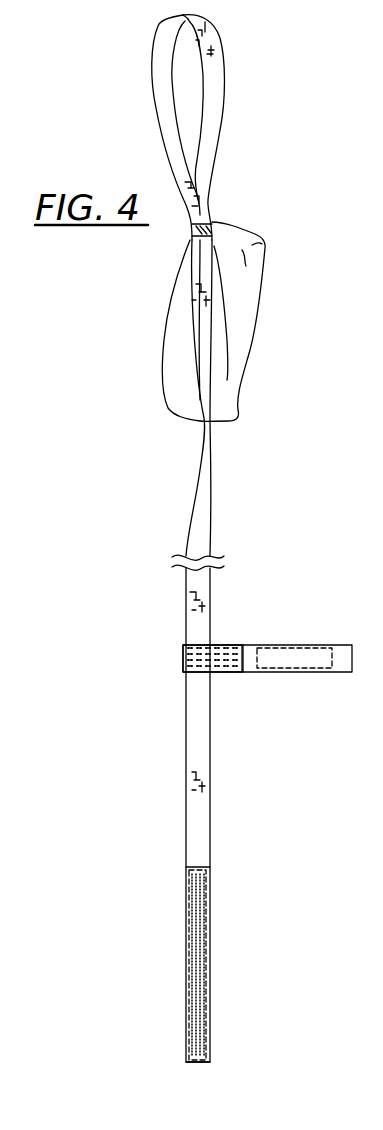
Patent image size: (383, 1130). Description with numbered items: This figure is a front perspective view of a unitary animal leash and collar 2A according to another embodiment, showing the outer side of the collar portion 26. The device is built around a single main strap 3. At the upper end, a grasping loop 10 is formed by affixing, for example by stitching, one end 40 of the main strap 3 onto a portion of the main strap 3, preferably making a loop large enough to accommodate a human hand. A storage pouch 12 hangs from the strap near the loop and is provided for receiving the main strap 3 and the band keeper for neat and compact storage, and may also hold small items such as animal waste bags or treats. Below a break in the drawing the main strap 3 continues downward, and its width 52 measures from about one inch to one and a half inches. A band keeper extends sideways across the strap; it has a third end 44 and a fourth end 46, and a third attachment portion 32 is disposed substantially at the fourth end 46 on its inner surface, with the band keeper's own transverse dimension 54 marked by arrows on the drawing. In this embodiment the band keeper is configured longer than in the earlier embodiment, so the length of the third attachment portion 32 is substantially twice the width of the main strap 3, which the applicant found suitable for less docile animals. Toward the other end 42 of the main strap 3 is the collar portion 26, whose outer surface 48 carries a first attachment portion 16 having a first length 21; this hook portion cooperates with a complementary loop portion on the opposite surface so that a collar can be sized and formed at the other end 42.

The grasping loop 10 is at (228, 66).
The end of the main strap 40 is at (214, 127).
The storage pouch 12 is at (252, 320).
The main strap 3 is at (192, 504).
The unitary animal leash and collar 2A is at (252, 476).
The width of fastener strip 54 is at (267, 708).
The outer surface 48 is at (200, 836).
The fourth end 46 is at (173, 651).
The third attachment portion 32 is at (184, 660).
The third end 44 is at (230, 654).
The width of the main strap 52 is at (214, 747).
The first length 21 is at (157, 1062).
The first attachment portion 16 is at (211, 928).
The collar portion 26 is at (230, 973).
The other end of the main strap 42 is at (204, 1072).